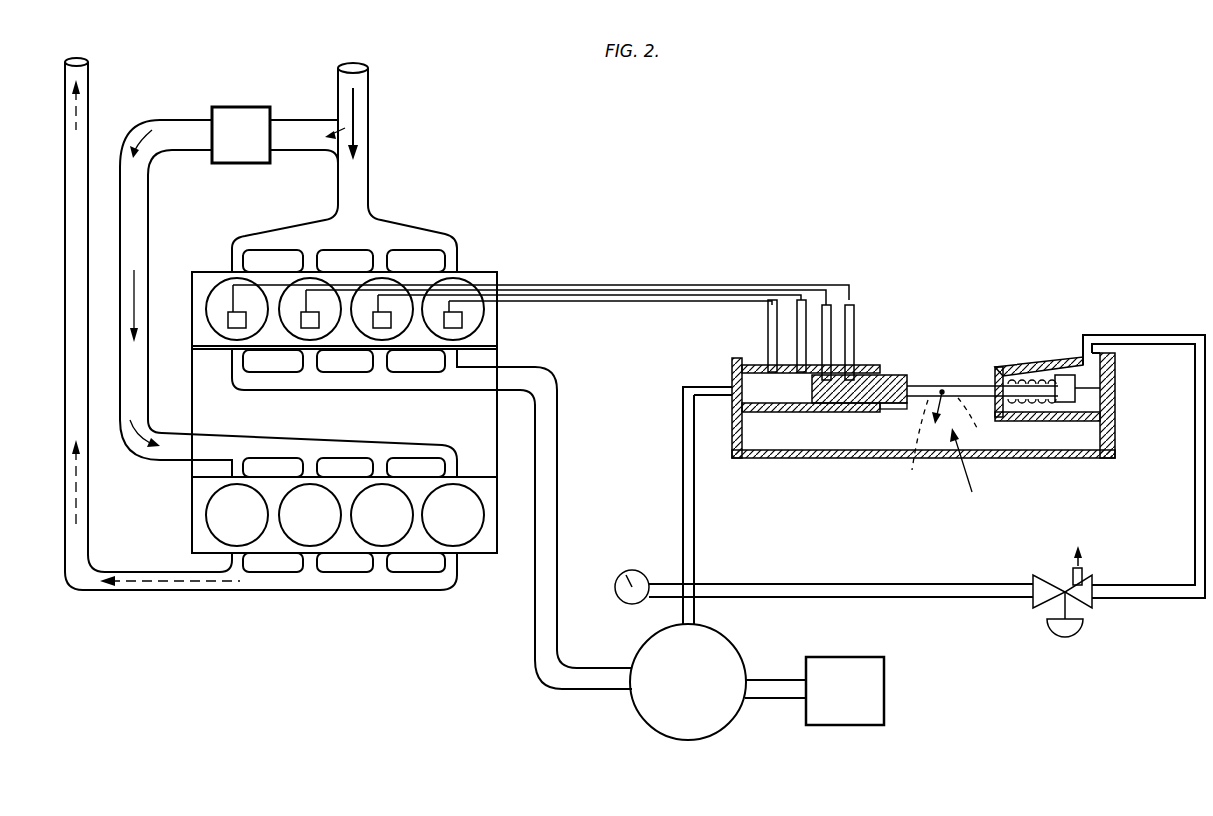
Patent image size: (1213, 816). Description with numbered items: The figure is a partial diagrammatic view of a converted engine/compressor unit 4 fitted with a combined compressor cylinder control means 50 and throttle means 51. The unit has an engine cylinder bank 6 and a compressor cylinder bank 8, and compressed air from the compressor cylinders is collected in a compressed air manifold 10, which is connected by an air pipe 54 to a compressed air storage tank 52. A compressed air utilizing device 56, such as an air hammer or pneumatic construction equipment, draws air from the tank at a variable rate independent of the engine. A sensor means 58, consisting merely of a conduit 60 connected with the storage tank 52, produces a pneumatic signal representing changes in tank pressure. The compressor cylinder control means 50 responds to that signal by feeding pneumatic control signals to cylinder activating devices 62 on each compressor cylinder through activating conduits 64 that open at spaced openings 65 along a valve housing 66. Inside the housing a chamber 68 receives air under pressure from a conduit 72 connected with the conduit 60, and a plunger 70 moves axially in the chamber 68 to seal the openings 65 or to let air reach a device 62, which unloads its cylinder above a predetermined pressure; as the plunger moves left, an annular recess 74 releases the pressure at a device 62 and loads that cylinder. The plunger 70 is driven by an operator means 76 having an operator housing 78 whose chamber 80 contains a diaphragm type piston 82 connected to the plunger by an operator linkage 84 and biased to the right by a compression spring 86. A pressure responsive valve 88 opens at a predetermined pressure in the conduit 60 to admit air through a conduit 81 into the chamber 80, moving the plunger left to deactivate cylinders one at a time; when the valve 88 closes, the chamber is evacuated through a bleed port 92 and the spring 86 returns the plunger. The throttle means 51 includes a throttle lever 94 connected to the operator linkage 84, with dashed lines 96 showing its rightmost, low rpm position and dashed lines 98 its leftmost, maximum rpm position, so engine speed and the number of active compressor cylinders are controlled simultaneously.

The engine/compressor unit 4 is at (363, 413).
The engine cylinder bank 6 is at (478, 555).
The compressor cylinder bank 8 is at (478, 270).
The compressed air manifold 10 is at (426, 389).
The compressor cylinder control means 50 is at (1006, 303).
The throttle means 51 is at (969, 469).
The compressed air storage tank 52 is at (722, 724).
The air pipe 54 is at (558, 490).
The compressed air utilizing device 56 is at (814, 691).
The sensor means 58 is at (772, 580).
The conduit 60 is at (728, 598).
The cylinder activating devices 62 is at (345, 316).
The activating conduits 64 is at (770, 330).
The openings 65 is at (811, 395).
The valve housing 66 is at (790, 414).
The chamber 68 is at (730, 410).
The plunger 70 is at (890, 408).
The conduit 72 is at (681, 521).
The annular recess 74 is at (832, 406).
The operator means 76 is at (1066, 381).
The operator housing 78 is at (1096, 424).
The chamber 80 is at (1094, 400).
The conduit 81 is at (1194, 509).
The diaphragm type piston 82 is at (1078, 385).
The operator linkage 84 is at (1000, 416).
The compression spring 86 is at (1022, 362).
The pressure responsive valve 88 is at (1088, 620).
The bleed port 92 is at (1086, 582).
The throttle lever 94 is at (947, 432).
The dashed lines 96 is at (973, 424).
The dashed lines 98 is at (904, 451).